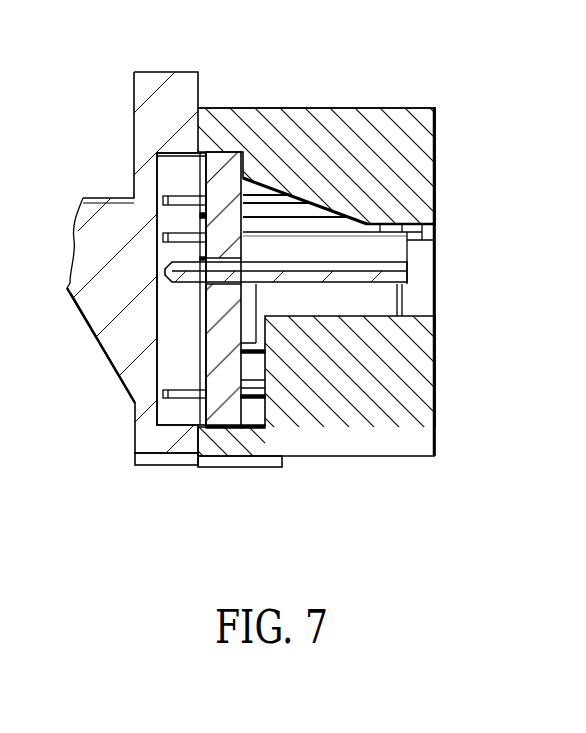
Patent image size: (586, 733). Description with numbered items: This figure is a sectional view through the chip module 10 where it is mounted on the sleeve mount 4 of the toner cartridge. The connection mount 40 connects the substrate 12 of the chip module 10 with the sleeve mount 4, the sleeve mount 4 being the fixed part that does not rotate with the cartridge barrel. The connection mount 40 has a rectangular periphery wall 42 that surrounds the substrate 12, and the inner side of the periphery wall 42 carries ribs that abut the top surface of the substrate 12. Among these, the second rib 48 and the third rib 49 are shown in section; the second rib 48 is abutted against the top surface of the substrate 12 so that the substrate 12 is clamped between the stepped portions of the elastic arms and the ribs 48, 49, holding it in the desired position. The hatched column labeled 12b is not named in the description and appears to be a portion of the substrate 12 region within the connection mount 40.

The sleeve mount 4 is at (157, 127).
The chip module 10 is at (453, 130).
The substrate 12 is at (221, 384).
The pin block 12b is at (181, 289).
The connection mount 40 is at (437, 423).
The periphery wall 42 is at (224, 118).
The second rib 48 is at (312, 182).
The third rib 49 is at (348, 370).